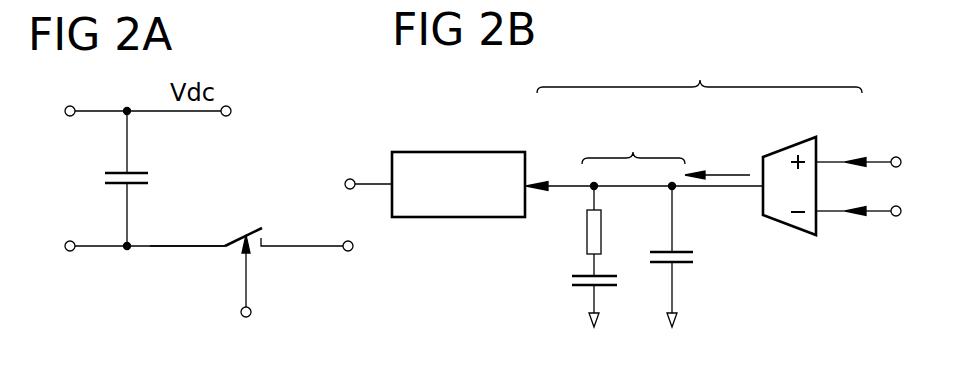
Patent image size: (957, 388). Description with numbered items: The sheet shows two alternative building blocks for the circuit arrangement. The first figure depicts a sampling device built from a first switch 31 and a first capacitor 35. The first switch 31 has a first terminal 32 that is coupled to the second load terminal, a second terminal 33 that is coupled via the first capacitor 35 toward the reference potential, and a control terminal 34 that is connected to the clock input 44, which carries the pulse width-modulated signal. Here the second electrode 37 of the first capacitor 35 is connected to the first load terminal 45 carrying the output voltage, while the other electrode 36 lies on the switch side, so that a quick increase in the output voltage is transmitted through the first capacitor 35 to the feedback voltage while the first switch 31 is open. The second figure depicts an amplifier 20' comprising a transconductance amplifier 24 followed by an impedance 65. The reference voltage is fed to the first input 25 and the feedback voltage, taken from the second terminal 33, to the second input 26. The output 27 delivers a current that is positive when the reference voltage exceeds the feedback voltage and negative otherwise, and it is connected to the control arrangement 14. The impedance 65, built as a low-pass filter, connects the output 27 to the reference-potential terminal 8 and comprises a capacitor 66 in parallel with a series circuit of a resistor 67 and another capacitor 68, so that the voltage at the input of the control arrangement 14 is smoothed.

In FIG. 2A, the first capacitor 35 is at (94, 180).
In FIG. 2A, the second electrode 37 is at (125, 172).
In FIG. 2A, the second capacitor terminal 36 is at (120, 188).
In FIG. 2A, the first load terminal 45 is at (227, 117).
In FIG. 2A, the first switch 31 is at (240, 240).
In FIG. 2A, the first terminal 32 is at (273, 237).
In FIG. 2A, the second terminal 33 is at (198, 249).
In FIG. 2A, the control terminal 34 is at (248, 266).
In FIG. 2A, the clock input 44 is at (252, 312).
In FIG. 2B, the control arrangement 14 is at (478, 151).
In FIG. 2B, the amplifier 20' is at (656, 209).
In FIG. 2B, the impedance 65 is at (634, 204).
In FIG. 2B, the resistor 67 is at (587, 232).
In FIG. 2B, the another capacitor 68 is at (572, 279).
In FIG. 2B, the capacitor 66 is at (694, 257).
In FIG. 2B, the reference-potential terminal 8 is at (580, 320).
In FIG. 2B, the transconductance amplifier 24 is at (783, 144).
In FIG. 2B, the first input 25 is at (817, 157).
In FIG. 2B, the second input 26 is at (817, 216).
In FIG. 2B, the output 27 is at (762, 190).